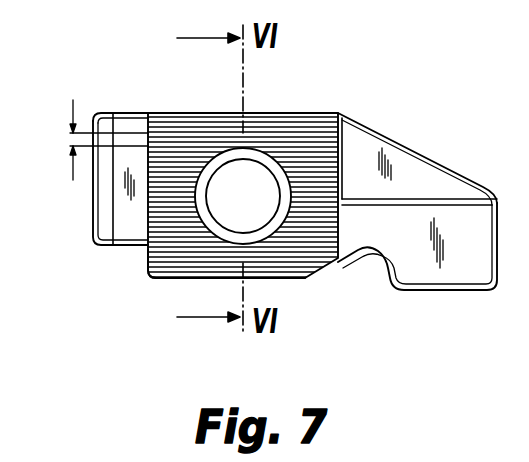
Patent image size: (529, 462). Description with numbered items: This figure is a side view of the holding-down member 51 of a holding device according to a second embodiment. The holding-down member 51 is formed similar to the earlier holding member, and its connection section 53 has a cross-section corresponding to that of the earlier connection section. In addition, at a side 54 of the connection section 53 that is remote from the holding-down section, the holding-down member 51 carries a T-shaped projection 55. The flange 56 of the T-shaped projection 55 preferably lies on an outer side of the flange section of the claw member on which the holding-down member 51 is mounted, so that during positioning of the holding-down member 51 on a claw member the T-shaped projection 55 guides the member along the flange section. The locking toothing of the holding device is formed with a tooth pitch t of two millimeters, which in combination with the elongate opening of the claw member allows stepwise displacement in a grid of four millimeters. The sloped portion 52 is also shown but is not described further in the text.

The holding-down member 51 is at (447, 292).
The inclined portion of clamp 52 is at (420, 168).
The connection section 53 is at (172, 112).
The side of the connection section 54 is at (147, 257).
The T-shaped projection 55 is at (130, 123).
The flange of the T-shaped projection 56 is at (103, 190).
The tooth pitch t is at (70, 134).